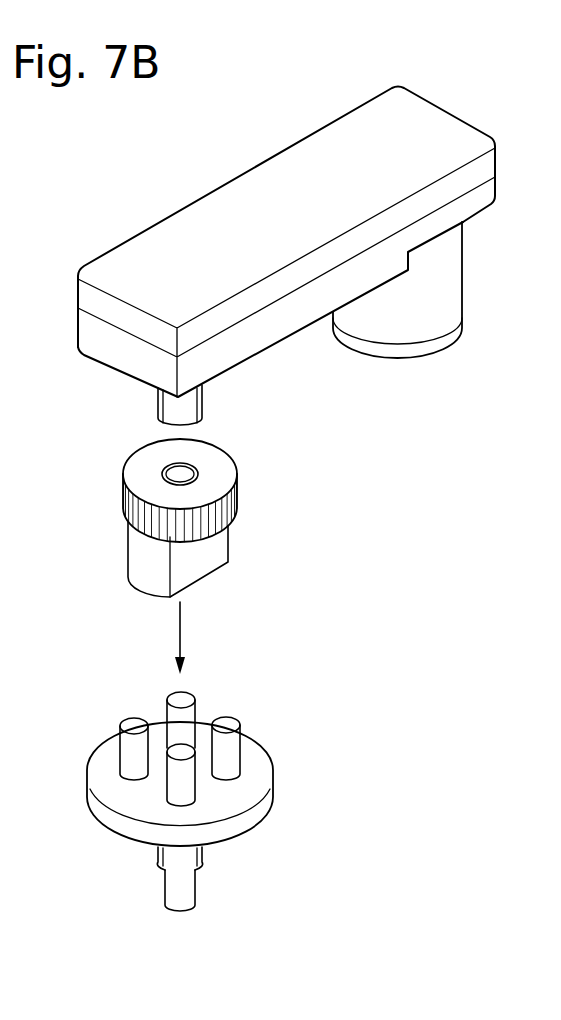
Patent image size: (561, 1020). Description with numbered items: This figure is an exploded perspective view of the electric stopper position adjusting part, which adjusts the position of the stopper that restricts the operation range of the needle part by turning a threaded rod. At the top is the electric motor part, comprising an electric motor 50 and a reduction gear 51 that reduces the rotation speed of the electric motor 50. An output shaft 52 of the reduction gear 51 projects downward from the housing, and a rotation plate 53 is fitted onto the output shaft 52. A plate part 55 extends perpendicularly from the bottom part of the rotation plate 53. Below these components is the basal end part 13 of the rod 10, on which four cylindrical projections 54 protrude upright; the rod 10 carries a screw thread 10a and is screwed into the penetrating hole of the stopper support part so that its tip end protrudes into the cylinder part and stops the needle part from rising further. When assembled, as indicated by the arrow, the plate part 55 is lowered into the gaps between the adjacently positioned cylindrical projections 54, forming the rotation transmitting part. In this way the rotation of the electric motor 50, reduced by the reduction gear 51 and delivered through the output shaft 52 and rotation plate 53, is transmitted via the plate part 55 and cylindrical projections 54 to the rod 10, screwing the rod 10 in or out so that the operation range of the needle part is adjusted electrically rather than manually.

The reduction gear 51 is at (424, 128).
The electric motor 50 is at (442, 285).
The output shaft 52 is at (175, 410).
The rotation plate 53 is at (233, 502).
The plate part 55 is at (200, 557).
The basal end part 13 is at (253, 773).
The cylindrical projections 54 is at (175, 715).
The screw thread 10a is at (202, 853).
The rod 10 is at (187, 887).